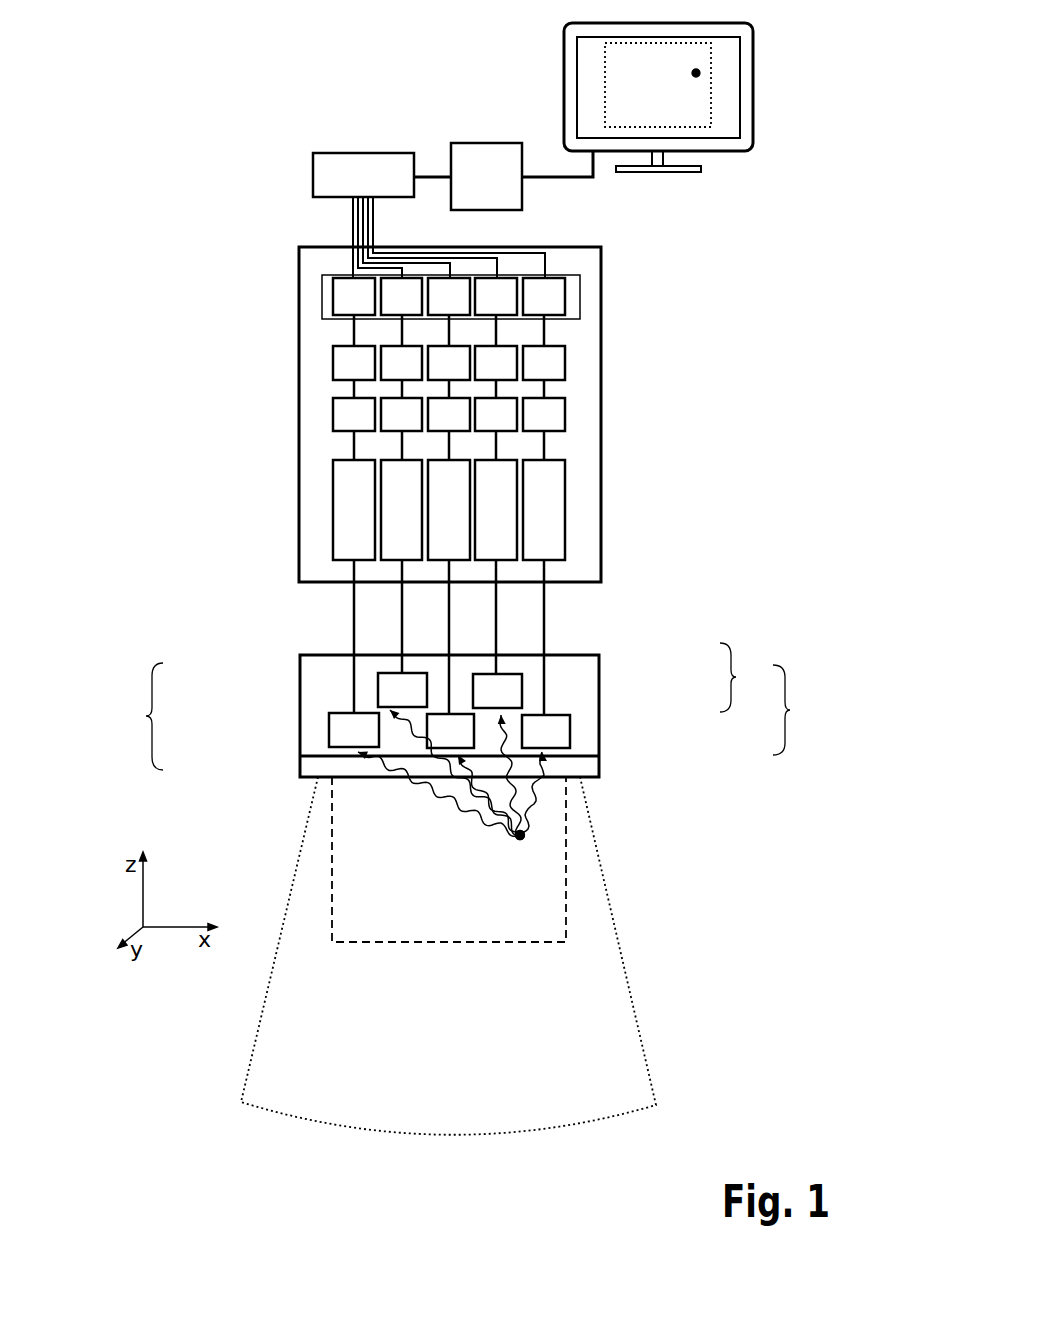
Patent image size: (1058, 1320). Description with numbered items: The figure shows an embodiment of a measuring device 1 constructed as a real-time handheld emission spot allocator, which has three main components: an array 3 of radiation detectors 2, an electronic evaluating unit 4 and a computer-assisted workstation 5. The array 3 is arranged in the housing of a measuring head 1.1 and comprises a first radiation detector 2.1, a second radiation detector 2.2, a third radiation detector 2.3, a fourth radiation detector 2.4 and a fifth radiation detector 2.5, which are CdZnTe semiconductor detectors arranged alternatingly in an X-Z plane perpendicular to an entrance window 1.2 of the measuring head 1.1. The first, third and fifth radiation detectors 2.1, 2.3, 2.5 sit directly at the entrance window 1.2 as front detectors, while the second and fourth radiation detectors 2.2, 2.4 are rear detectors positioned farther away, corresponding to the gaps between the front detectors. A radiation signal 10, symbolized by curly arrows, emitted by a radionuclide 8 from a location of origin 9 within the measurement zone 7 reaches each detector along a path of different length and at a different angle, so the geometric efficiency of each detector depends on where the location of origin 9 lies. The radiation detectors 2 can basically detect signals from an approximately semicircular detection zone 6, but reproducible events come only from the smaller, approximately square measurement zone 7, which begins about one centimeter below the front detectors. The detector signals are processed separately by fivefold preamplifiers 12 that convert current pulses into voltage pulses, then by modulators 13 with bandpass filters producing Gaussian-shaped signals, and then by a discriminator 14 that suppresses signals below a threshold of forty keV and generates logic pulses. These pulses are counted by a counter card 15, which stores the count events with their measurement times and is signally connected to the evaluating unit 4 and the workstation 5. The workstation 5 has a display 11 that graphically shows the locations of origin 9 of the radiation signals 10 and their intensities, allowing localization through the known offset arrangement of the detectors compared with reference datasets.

The measuring device 1 is at (769, 280).
The measuring head 1.1 is at (578, 653).
The entrance window 1.2 is at (588, 767).
The radiation detectors 2 is at (443, 706).
The first radiation detector 2.1 is at (338, 720).
The second radiation detector 2.2 is at (387, 684).
The third radiation detector 2.3 is at (432, 730).
The fourth radiation detector 2.4 is at (517, 690).
The fifth radiation detector 2.5 is at (565, 730).
The array 3 is at (793, 710).
The electronic evaluating unit 4 is at (360, 165).
The computer-assisted workstation 5 is at (483, 150).
The detection zone 6 is at (587, 1000).
The measurement zone 7 is at (552, 906).
The radionuclide 8 is at (631, 866).
The location of origin 9 is at (525, 834).
The radiation signal 10 is at (520, 792).
The display 11 is at (572, 90).
The preamplifiers 12 is at (333, 507).
The modulators 13 is at (333, 413).
The discriminator 14 is at (333, 362).
The counter card 15 is at (322, 297).